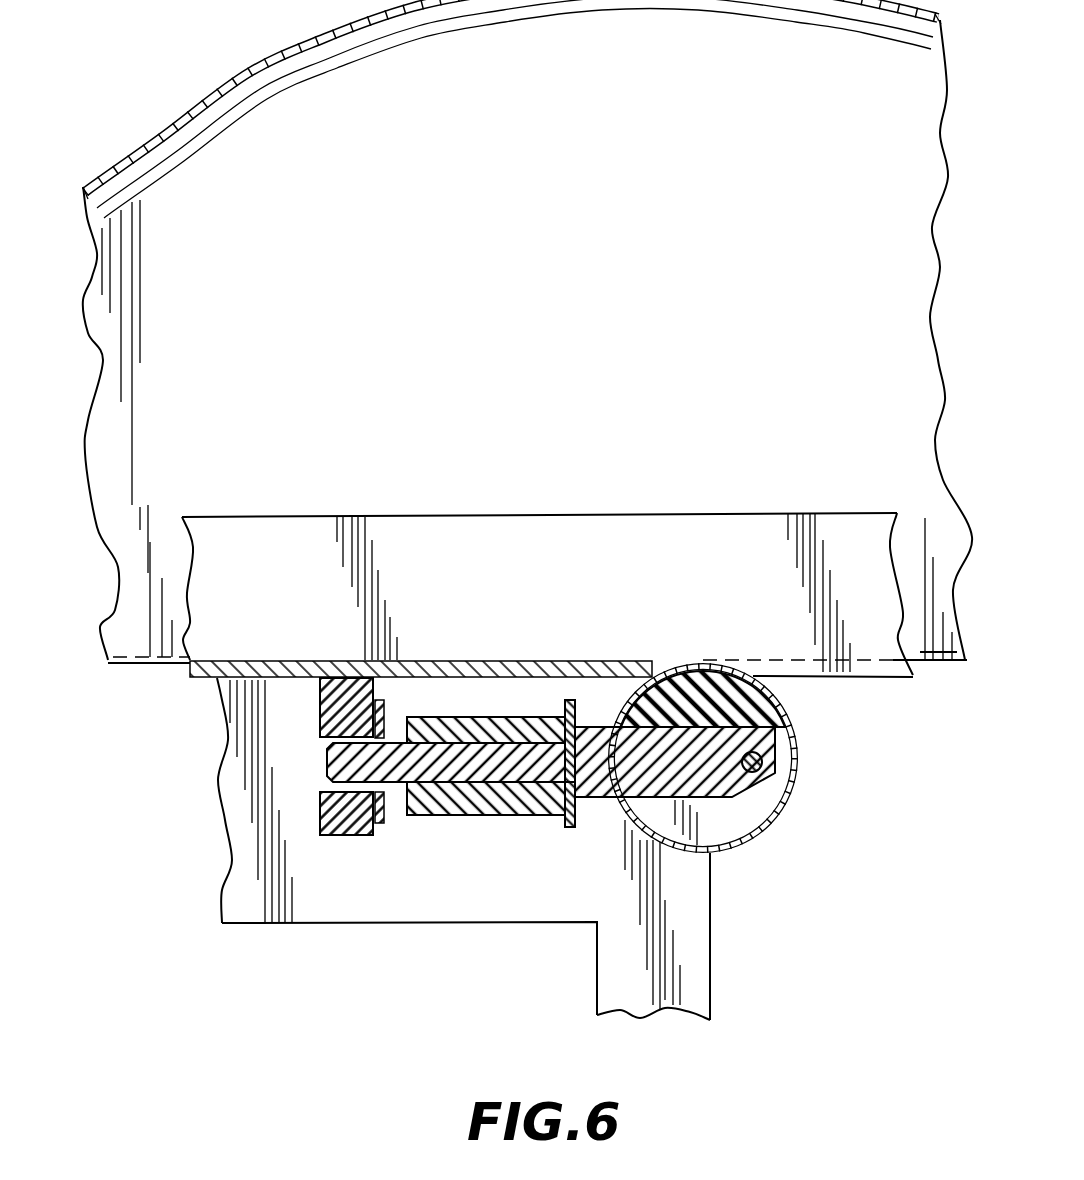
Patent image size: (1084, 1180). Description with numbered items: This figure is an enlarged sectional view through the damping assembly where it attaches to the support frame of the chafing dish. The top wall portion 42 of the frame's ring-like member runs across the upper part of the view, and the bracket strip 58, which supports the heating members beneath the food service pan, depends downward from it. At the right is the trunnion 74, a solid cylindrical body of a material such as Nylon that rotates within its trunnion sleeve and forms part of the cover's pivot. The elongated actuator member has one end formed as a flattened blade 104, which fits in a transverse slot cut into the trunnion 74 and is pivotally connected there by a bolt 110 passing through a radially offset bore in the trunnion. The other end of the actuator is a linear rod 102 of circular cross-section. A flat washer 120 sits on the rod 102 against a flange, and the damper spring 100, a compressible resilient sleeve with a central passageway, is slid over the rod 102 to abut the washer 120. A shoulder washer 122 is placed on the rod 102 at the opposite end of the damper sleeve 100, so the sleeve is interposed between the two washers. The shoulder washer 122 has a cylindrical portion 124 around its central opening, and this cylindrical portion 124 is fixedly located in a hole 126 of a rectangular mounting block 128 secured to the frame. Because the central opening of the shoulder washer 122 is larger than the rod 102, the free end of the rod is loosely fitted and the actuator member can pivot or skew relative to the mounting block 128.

The top wall portion 42 is at (277, 662).
The bracket strip 58 is at (700, 983).
The trunnion 74 is at (693, 690).
The damper spring 100 is at (449, 815).
The linear rod 102 is at (467, 750).
The flattened blade 104 is at (597, 740).
The bolt 110 is at (767, 757).
The flat washer 120 is at (575, 828).
The shoulder washer 122 is at (388, 822).
The cylindrical portion 124 is at (327, 778).
The hole 126 is at (317, 822).
The mounting block 128 is at (318, 705).